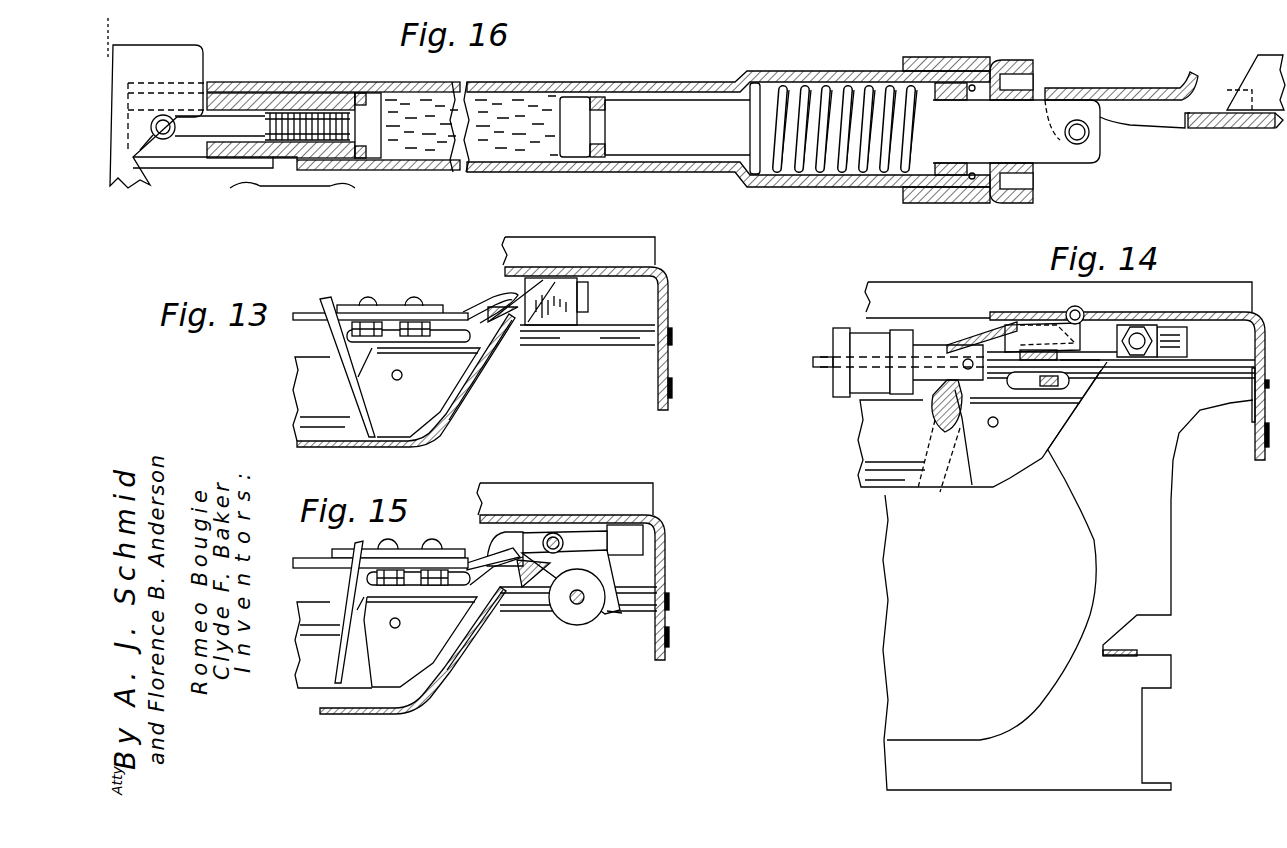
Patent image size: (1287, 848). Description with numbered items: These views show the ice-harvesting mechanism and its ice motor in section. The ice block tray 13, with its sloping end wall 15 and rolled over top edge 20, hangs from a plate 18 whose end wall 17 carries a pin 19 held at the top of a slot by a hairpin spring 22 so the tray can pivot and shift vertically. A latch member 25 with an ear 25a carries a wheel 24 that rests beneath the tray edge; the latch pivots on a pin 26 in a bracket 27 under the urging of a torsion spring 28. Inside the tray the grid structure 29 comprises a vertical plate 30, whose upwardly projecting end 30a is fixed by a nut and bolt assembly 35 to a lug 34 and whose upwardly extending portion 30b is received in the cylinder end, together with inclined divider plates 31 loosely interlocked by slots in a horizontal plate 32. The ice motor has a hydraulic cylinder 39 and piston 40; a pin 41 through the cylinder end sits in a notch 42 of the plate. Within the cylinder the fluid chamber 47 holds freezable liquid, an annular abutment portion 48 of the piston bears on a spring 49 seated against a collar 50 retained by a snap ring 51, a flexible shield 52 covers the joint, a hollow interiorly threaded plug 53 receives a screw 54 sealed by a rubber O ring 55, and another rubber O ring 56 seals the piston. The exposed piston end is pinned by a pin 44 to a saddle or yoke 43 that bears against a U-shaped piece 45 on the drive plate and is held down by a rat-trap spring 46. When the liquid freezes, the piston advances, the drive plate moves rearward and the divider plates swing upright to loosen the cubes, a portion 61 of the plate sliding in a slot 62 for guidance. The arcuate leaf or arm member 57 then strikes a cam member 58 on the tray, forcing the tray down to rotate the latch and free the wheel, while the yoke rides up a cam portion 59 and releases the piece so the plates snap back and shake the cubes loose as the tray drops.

In FIG. 13, the ice block tray 13 is at (480, 394).
In FIG. 15, the ice block tray 13 is at (414, 722).
In FIG. 14, the ice block tray 13 is at (873, 606).
In FIG. 13, the sloping end wall 15 is at (450, 420).
In FIG. 15, the sloping end wall 15 is at (455, 677).
In FIG. 13, the end wall of plate 17 is at (668, 291).
In FIG. 14, the end wall of plate 17 is at (1261, 462).
In FIG. 13, the plate 18 is at (645, 268).
In FIG. 15, the plate 18 is at (656, 514).
In FIG. 14, the plate 18 is at (1245, 318).
In FIG. 14, the pin 19 is at (1250, 414).
In FIG. 14, the rolled over top edge 20 is at (1240, 377).
In FIG. 14, the hairpin spring 22 is at (1254, 428).
In FIG. 15, the wheel 24 is at (576, 627).
In FIG. 15, the latch member 25 is at (620, 578).
In FIG. 15, the ear of latch member 25a is at (610, 616).
In FIG. 15, the pin 26 is at (553, 533).
In FIG. 15, the bracket 27 is at (645, 543).
In FIG. 15, the torsion spring 28 is at (583, 530).
In FIG. 15, the grid structure 29 is at (301, 550).
In FIG. 16, the vertical plate 30 is at (318, 178).
In FIG. 13, the vertical plate 30 is at (296, 380).
In FIG. 15, the vertical plate 30 is at (308, 690).
In FIG. 14, the vertical plate 30 is at (870, 450).
In FIG. 13, the upwardly projecting end of vertical plate 30a is at (585, 302).
In FIG. 15, the upwardly projecting end of vertical plate 30a is at (506, 530).
In FIG. 14, the upwardly projecting end of vertical plate 30a is at (1182, 352).
In FIG. 16, the upwardly extending portion 30b is at (200, 62).
In FIG. 13, the divider plate 31 is at (345, 380).
In FIG. 15, the divider plate 31 is at (352, 637).
In FIG. 14, the divider plate 31 is at (958, 428).
In FIG. 13, the horizontal plate 32 is at (293, 318).
In FIG. 15, the horizontal plate 32 is at (313, 568).
In FIG. 14, the horizontal plate 32 is at (817, 368).
In FIG. 14, the lug 34 is at (1152, 325).
In FIG. 14, the nut and bolt assembly 35 is at (1138, 357).
In FIG. 16, the hydraulic cylinder 39 is at (544, 84).
In FIG. 14, the hydraulic cylinder 39 is at (836, 330).
In FIG. 16, the piston 40 is at (665, 105).
In FIG. 14, the piston 40 is at (922, 345).
In FIG. 16, the pin 41 is at (170, 142).
In FIG. 14, the pin 41 is at (940, 405).
In FIG. 16, the notch 42 is at (177, 127).
In FIG. 16, the saddle or yoke 43 is at (1133, 88).
In FIG. 14, the saddle or yoke 43 is at (965, 338).
In FIG. 16, the pin 44 is at (1078, 144).
In FIG. 16, the U-shaped piece 45 is at (1240, 130).
In FIG. 13, the U-shaped piece 45 is at (390, 306).
In FIG. 15, the U-shaped piece 45 is at (410, 549).
In FIG. 14, the U-shaped piece 45 is at (1070, 372).
In FIG. 14, the rat-trap spring 46 is at (1081, 307).
In FIG. 16, the fluid chamber 47 is at (505, 134).
In FIG. 16, the annular abutment portion 48 is at (758, 84).
In FIG. 16, the spring 49 is at (836, 86).
In FIG. 16, the collar 50 is at (947, 82).
In FIG. 16, the snap ring 51 is at (969, 190).
In FIG. 16, the flexible shield 52 is at (995, 62).
In FIG. 16, the hollow interiorly threaded plug 53 is at (327, 95).
In FIG. 16, the screw 54 is at (289, 110).
In FIG. 16, the rubber O ring 55 is at (370, 164).
In FIG. 16, the rubber O ring 56 is at (597, 160).
In FIG. 13, the arcuate leaf or arm member 57 is at (490, 318).
In FIG. 15, the arcuate leaf or arm member 57 is at (478, 556).
In FIG. 13, the cam member 58 is at (540, 307).
In FIG. 15, the cam member 58 is at (526, 587).
In FIG. 14, the cam member 58 is at (1120, 658).
In FIG. 16, the cam portion 59 is at (1242, 70).
In FIG. 14, the cam portion 59 is at (1052, 328).
In FIG. 14, the portion of plate 61 is at (1056, 388).
In FIG. 14, the slot 62 is at (1026, 390).